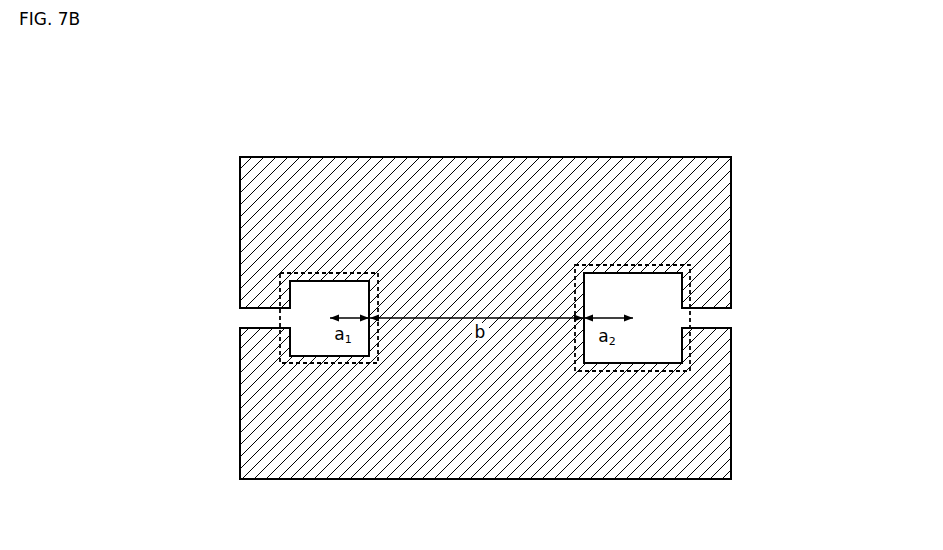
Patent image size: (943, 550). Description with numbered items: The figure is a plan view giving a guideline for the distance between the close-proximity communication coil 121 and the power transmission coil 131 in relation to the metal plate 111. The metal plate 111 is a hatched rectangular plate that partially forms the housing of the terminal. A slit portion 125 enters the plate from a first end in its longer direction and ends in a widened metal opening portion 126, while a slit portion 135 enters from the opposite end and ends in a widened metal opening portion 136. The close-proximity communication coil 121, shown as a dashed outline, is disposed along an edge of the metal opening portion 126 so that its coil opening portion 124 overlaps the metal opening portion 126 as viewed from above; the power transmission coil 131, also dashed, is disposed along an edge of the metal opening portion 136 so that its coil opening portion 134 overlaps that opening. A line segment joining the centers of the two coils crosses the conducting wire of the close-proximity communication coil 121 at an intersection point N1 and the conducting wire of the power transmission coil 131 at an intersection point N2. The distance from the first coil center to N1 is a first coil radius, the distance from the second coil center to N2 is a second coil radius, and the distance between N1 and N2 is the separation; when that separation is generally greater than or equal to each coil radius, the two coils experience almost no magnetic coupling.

The metal plate 111 is at (482, 479).
The close-proximity communication coil 121 is at (273, 289).
The coil opening portion 124 is at (323, 268).
The slit portion 125 is at (230, 319).
The metal opening portion 126 is at (323, 353).
The power transmission coil 131 is at (696, 278).
The coil opening portion 134 is at (635, 260).
The slit portion 135 is at (741, 318).
The metal opening portion 136 is at (644, 360).
The intersection point N1 is at (378, 322).
The intersection point N2 is at (578, 322).